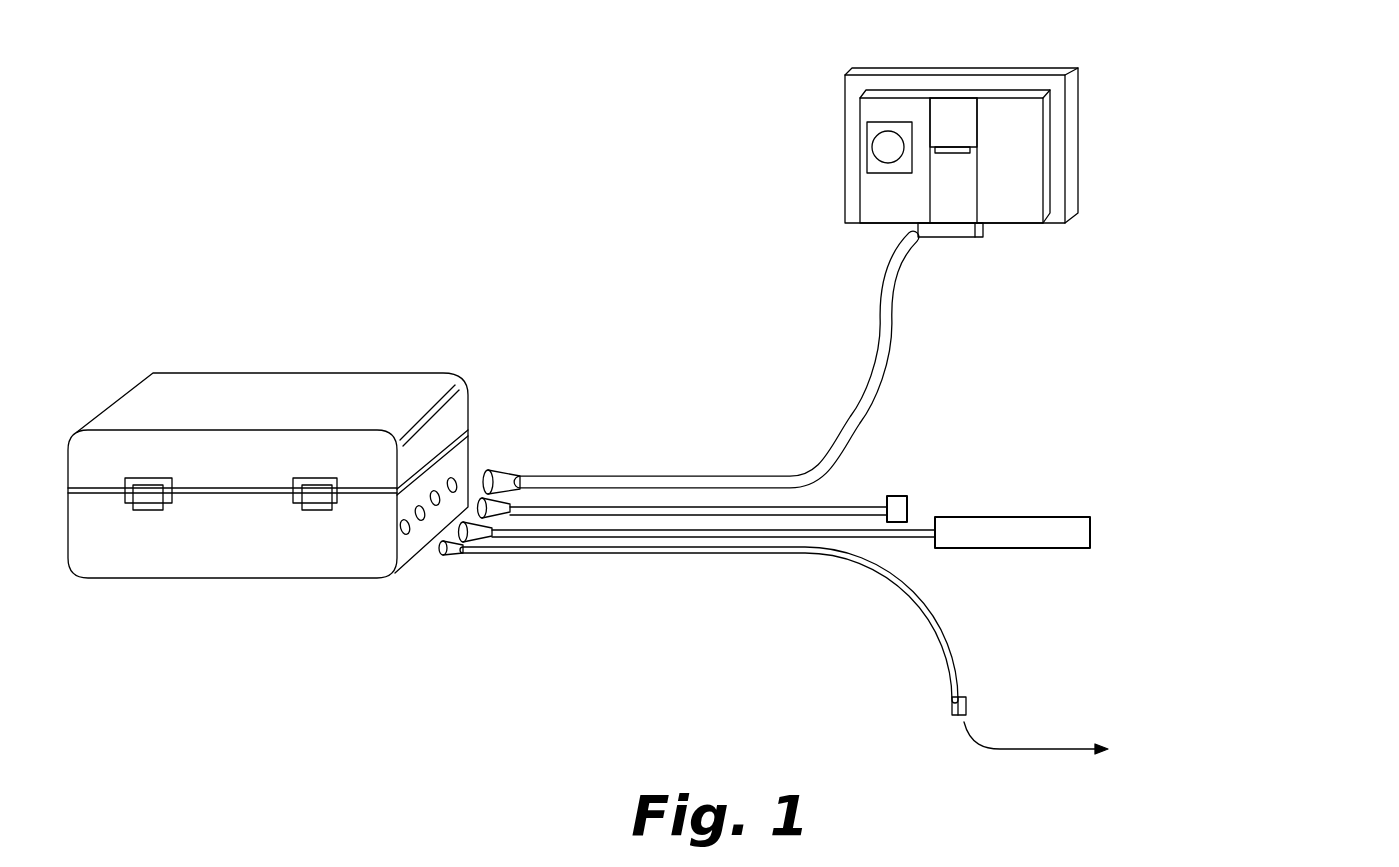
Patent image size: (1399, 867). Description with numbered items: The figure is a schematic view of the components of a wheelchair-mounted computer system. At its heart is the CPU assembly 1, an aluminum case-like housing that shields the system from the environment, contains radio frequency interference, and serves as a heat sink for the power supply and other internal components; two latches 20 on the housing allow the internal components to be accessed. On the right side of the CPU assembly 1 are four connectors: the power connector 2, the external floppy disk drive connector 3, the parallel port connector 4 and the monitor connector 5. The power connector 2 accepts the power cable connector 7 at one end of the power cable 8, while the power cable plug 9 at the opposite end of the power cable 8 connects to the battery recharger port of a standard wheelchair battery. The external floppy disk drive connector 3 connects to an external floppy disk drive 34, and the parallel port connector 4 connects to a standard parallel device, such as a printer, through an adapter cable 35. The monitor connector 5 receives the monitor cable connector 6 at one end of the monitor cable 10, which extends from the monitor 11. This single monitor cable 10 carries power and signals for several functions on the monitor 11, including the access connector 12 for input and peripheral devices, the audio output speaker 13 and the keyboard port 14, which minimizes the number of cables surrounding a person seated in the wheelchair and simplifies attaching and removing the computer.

The CPU assembly 1 is at (277, 413).
The power connector 2 is at (402, 533).
The external floppy disk drive connector 3 is at (417, 522).
The parallel port connector 4 is at (433, 490).
The monitor connector 5 is at (452, 477).
The monitor cable connector 6 is at (498, 472).
The power cable connector 7 is at (453, 557).
The power cable 8 is at (878, 569).
The power cable plug 9 is at (949, 716).
The monitor cable 10 is at (873, 358).
The monitor 11 is at (992, 66).
The access connector 12 is at (949, 158).
The audio output speaker 13 is at (885, 124).
The keyboard port 14 is at (985, 233).
The latches 20 is at (315, 510).
The external floppy disk drive 34 is at (1091, 534).
The adapter cable 35 is at (835, 506).